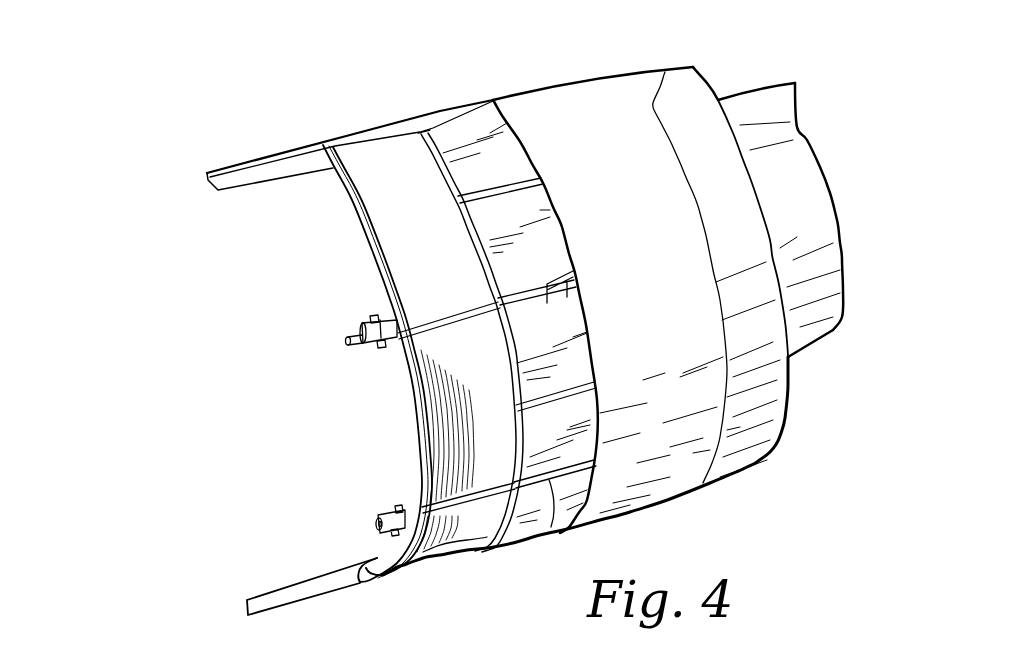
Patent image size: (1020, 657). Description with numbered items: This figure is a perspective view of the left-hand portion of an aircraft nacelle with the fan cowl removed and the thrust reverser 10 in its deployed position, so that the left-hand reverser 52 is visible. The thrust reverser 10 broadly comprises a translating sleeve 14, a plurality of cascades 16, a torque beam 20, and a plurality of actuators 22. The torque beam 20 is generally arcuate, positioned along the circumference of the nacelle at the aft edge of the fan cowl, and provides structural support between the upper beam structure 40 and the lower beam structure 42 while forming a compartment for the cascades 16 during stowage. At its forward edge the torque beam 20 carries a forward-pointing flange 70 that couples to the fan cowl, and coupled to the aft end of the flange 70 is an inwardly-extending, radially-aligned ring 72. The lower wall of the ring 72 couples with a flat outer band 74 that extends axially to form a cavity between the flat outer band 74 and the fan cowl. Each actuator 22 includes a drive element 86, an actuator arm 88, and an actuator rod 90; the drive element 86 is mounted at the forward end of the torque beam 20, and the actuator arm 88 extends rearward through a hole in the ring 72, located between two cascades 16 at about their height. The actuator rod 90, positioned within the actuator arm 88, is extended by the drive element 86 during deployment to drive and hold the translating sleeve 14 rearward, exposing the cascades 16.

The thrust reverser 10 is at (834, 519).
The translating sleeve 14 is at (613, 91).
The cascades 16 is at (556, 243).
The torque beam 20 is at (328, 106).
The actuators 22 is at (309, 356).
The upper beam structure 40 is at (217, 193).
The lower beam structure 42 is at (243, 607).
The left-hand reverser 52 is at (708, 552).
The forward-pointing flange 70 is at (348, 194).
The ring 72 is at (374, 574).
The flat outer band 74 is at (387, 163).
The drive element 86 is at (365, 323).
The actuator arm 88 is at (457, 312).
The actuator rod 90 is at (548, 292).